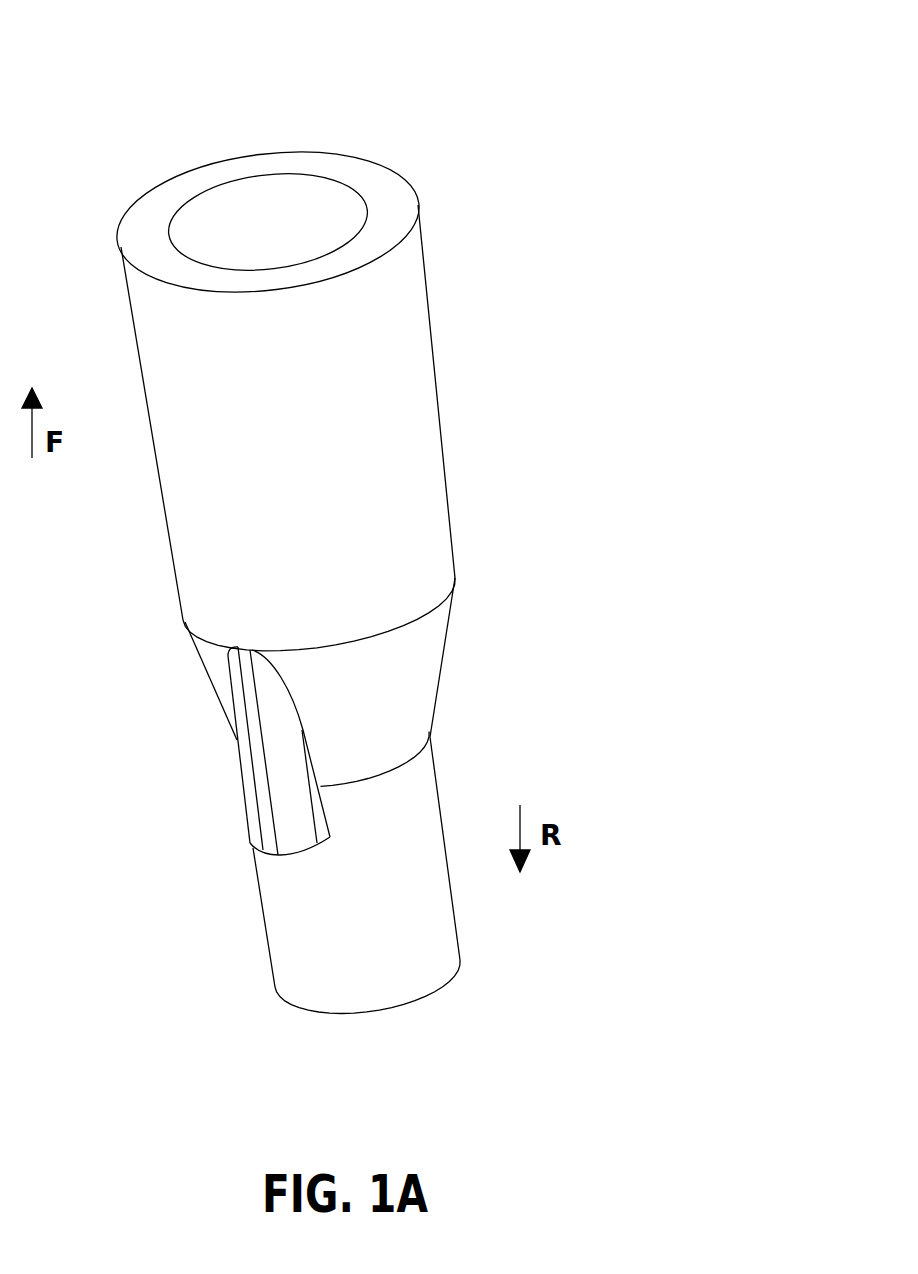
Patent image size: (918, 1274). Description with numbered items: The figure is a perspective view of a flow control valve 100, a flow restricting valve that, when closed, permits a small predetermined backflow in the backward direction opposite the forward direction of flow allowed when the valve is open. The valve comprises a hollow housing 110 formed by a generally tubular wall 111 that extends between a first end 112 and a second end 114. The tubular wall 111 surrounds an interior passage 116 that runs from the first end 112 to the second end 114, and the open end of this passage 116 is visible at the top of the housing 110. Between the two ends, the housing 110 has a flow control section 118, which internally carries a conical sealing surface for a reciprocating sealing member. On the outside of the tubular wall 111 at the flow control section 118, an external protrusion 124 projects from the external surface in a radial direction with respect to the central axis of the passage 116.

The flow control valve 100 is at (562, 45).
The housing 110 is at (438, 382).
The tubular wall 111 is at (378, 220).
The first end 112 is at (444, 986).
The second end 114 is at (419, 194).
The interior passage 116 is at (297, 236).
The flow control section 118 is at (434, 667).
The external protrusion 124 is at (285, 783).